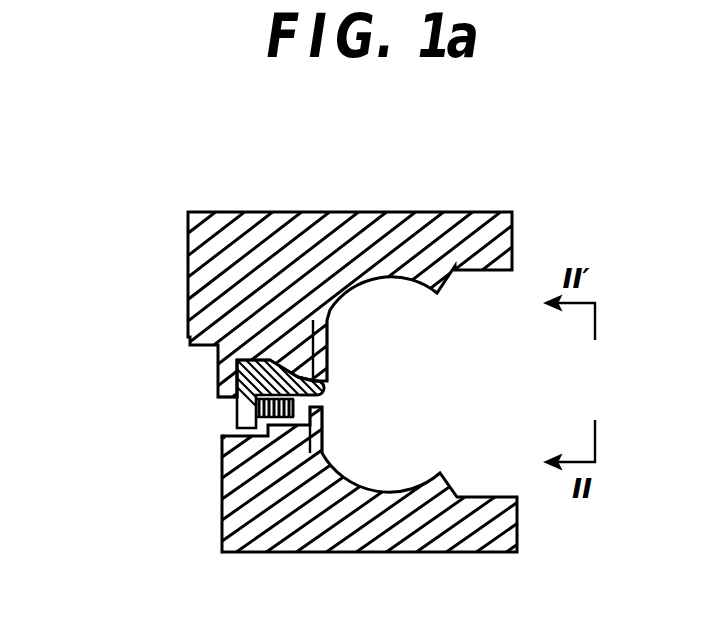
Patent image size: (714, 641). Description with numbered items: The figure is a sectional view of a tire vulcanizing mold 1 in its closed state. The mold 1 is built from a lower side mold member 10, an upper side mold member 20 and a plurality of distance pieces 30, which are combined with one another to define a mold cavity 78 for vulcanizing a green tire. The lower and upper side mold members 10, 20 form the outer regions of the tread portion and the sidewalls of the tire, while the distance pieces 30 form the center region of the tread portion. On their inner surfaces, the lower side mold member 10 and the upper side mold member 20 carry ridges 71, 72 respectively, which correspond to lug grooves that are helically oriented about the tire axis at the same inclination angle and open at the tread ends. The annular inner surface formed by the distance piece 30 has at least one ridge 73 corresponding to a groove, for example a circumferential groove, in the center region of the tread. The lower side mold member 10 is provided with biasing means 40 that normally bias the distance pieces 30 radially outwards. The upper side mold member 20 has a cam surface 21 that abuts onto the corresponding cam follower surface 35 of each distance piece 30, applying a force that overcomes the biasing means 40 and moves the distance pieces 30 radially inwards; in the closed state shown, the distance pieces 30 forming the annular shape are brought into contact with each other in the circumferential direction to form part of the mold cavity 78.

The tire vulcanizing mold 1 is at (459, 196).
The lower side mold member 10 is at (424, 515).
The upper side mold member 20 is at (307, 250).
The cam surface 21 is at (218, 383).
The cam follower surface 35 is at (185, 372).
The distance piece 30 is at (228, 411).
The biasing means 40 is at (291, 416).
The ridge 71 is at (327, 427).
The ridge 72 is at (332, 340).
The ridge 73 is at (327, 388).
The mold cavity 78 is at (390, 368).